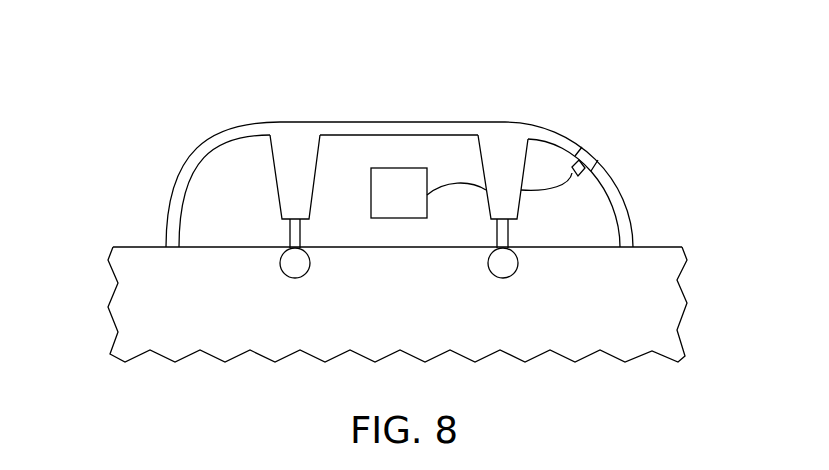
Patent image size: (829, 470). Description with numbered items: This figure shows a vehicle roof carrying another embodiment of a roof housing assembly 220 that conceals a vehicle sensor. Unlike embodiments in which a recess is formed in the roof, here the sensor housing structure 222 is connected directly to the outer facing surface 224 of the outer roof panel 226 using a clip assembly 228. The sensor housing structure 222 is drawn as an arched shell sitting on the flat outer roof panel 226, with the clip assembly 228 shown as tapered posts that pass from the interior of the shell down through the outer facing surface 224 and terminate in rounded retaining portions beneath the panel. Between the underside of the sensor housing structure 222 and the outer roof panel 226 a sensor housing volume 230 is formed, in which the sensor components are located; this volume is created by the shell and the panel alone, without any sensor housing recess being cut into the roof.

The roof housing assembly 220 is at (354, 171).
The sensor housing structure 222 is at (412, 118).
The outer facing surface 224 is at (399, 259).
The outer roof panel 226 is at (672, 247).
The clip assembly 228 is at (328, 170).
The sensor housing volume 230 is at (227, 228).